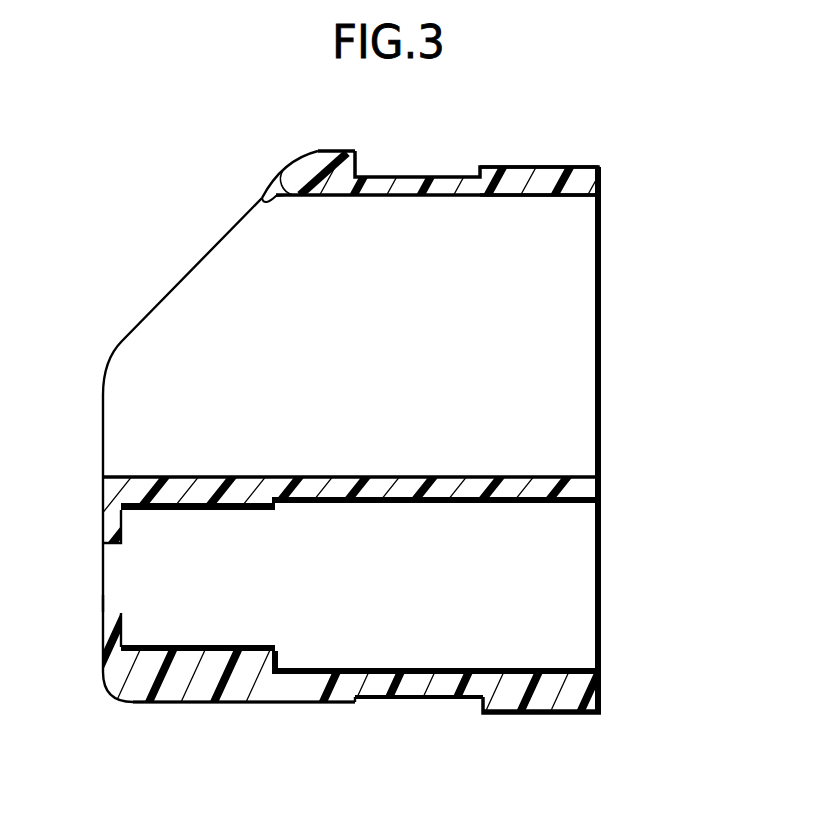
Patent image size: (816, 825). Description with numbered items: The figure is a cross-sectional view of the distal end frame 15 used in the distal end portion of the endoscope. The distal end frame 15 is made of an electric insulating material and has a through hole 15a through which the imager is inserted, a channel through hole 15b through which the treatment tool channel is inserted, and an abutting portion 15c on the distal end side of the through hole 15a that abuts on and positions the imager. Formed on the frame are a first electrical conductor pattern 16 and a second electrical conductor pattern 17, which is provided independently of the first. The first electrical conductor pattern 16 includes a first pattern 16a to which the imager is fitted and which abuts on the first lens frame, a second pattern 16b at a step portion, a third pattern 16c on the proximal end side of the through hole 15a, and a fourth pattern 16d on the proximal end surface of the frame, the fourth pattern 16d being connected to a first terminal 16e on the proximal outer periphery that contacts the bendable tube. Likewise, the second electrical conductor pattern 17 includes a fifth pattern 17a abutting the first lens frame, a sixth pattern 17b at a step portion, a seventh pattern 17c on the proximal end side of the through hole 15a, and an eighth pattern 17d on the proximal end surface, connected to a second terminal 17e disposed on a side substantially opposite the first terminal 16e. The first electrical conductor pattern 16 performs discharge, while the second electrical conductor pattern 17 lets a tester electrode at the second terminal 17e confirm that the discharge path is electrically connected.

The distal end frame 15 is at (165, 300).
The through hole 15a is at (107, 610).
The channel through hole 15b is at (262, 197).
The abutting portion 15c is at (124, 626).
The first electrical conductor pattern 16 is at (406, 646).
The first pattern 16a is at (182, 645).
The second pattern 16b is at (278, 658).
The third pattern 16c is at (398, 673).
The fourth pattern 16d is at (600, 690).
The first terminal 16e is at (581, 726).
The second electrical conductor pattern 17 is at (403, 413).
The fifth pattern 17a is at (228, 505).
The sixth pattern 17b is at (272, 507).
The seventh pattern 17c is at (523, 502).
The eighth pattern 17d is at (603, 235).
The second terminal 17e is at (603, 168).